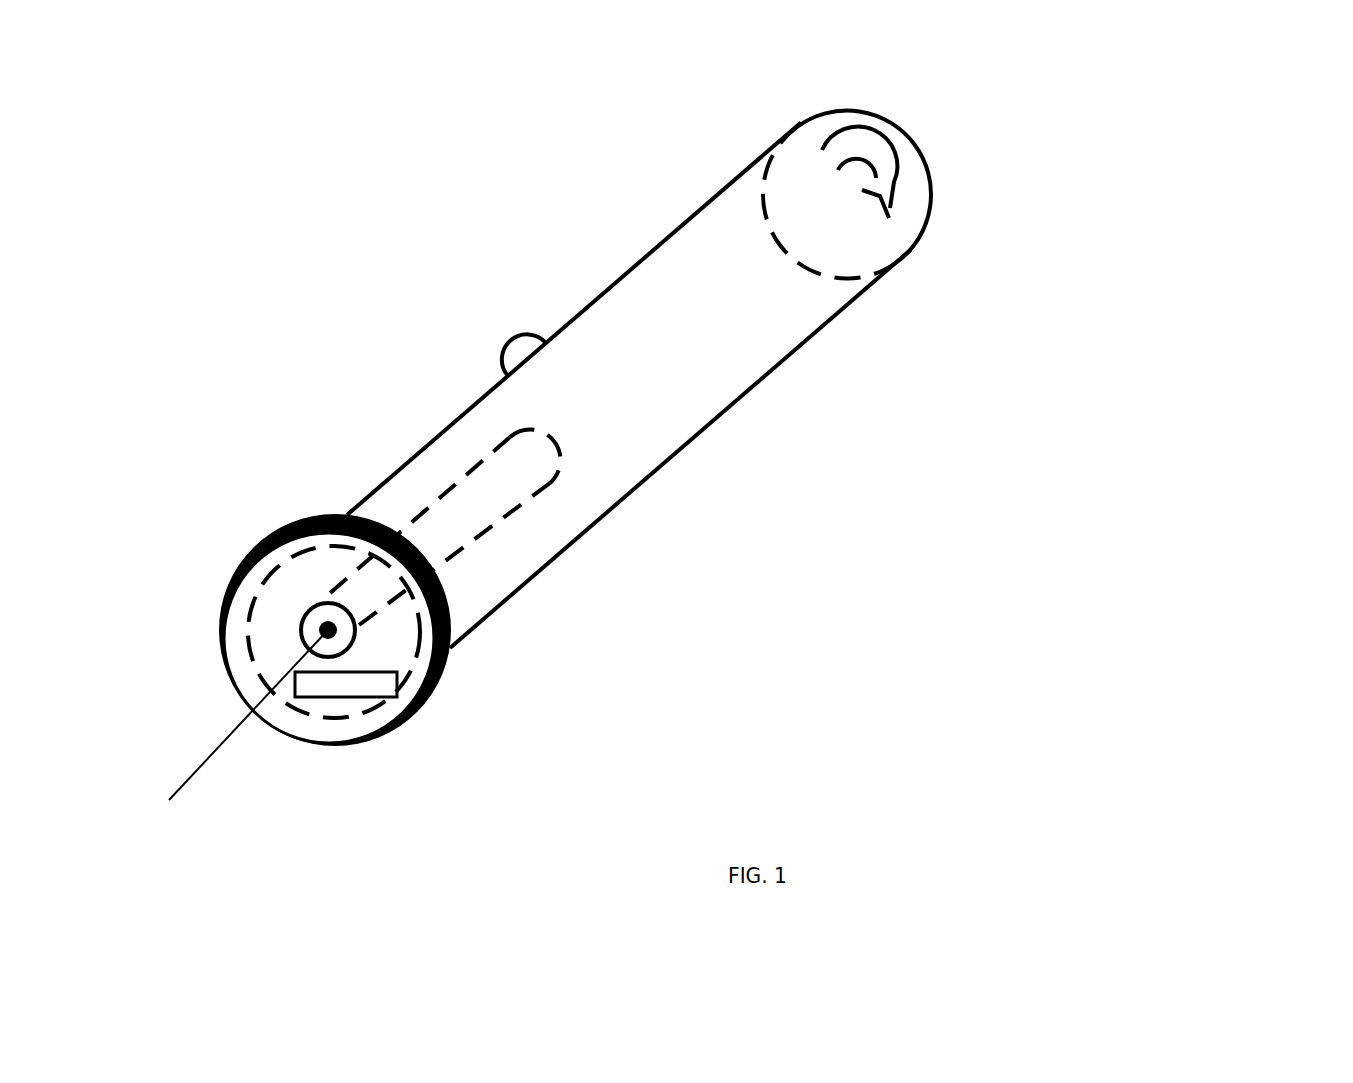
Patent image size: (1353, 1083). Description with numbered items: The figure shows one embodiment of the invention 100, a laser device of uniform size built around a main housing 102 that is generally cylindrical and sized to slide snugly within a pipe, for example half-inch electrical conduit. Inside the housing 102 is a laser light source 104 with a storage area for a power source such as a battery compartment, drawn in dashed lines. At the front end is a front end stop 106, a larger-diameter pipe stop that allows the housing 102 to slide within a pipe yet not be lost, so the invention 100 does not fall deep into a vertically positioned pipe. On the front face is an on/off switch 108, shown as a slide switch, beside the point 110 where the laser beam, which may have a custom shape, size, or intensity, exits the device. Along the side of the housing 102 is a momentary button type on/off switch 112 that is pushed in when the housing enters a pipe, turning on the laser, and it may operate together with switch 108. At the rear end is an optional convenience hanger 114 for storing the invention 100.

The invention 100 is at (1080, 50).
The main housing 102 is at (1320, 358).
The laser light source 104 is at (1320, 491).
The front end stop 106 is at (452, 602).
The on/off switch 108 is at (345, 700).
The laser beam exit 110 is at (843, 800).
The momentary button type on/off switch 112 is at (503, 358).
The convenience hanger 114 is at (1320, 172).